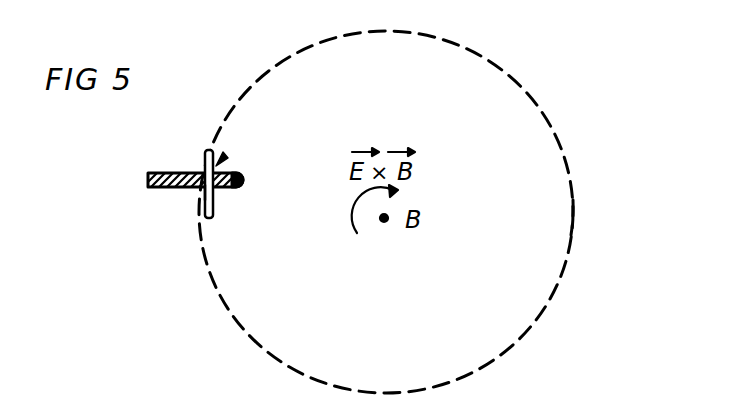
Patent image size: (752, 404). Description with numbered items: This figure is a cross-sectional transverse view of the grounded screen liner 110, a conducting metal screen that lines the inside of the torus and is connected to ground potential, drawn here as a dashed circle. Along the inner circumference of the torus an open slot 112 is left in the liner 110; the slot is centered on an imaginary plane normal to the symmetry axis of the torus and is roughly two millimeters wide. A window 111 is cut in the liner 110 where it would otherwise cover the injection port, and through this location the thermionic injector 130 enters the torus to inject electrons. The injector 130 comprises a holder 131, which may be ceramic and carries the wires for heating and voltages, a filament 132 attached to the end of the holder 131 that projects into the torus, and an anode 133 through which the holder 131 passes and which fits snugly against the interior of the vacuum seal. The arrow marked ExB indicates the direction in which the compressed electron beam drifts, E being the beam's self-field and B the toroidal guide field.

The screen liner 110 is at (503, 71).
The open slot 112 is at (568, 203).
The holder 131 is at (148, 180).
The filament 132 is at (250, 173).
The anode 133 is at (212, 208).
The window 111 is at (203, 192).
The thermionic injector 130 is at (221, 157).